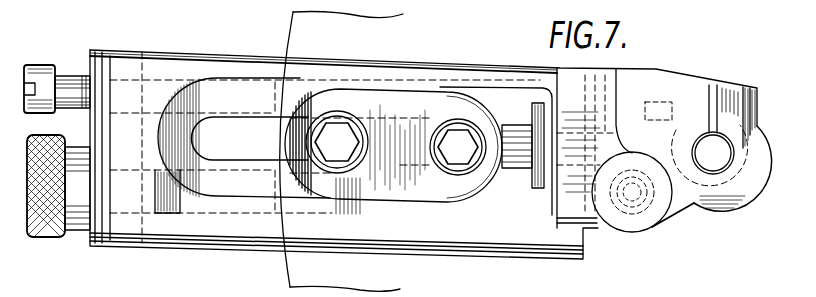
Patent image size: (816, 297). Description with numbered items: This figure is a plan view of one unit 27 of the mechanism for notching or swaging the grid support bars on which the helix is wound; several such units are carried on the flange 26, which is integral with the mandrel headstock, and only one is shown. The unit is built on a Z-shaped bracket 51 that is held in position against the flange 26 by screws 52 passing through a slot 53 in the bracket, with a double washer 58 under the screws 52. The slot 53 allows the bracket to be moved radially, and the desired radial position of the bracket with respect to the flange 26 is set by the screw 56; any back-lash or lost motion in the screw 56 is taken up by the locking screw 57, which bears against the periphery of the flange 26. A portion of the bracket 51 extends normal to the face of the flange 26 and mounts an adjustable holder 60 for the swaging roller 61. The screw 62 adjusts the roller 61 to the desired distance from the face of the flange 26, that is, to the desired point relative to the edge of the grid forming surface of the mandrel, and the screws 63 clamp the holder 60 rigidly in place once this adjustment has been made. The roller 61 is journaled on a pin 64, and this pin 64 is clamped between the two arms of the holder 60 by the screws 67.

The flange 26 is at (297, 264).
The unit 27 is at (205, 43).
The Z-shaped bracket 51 is at (388, 63).
The screws 52 is at (452, 118).
The slot 53 is at (202, 152).
The screw 56 is at (190, 214).
The locking screw 57 is at (65, 75).
The double washer 58 is at (424, 202).
The adjustable holder 60 is at (686, 216).
The swaging roller 61 is at (742, 213).
The screw 62 is at (629, 215).
The screws 63 is at (526, 190).
The pin 64 is at (728, 152).
The screws 67 is at (742, 92).